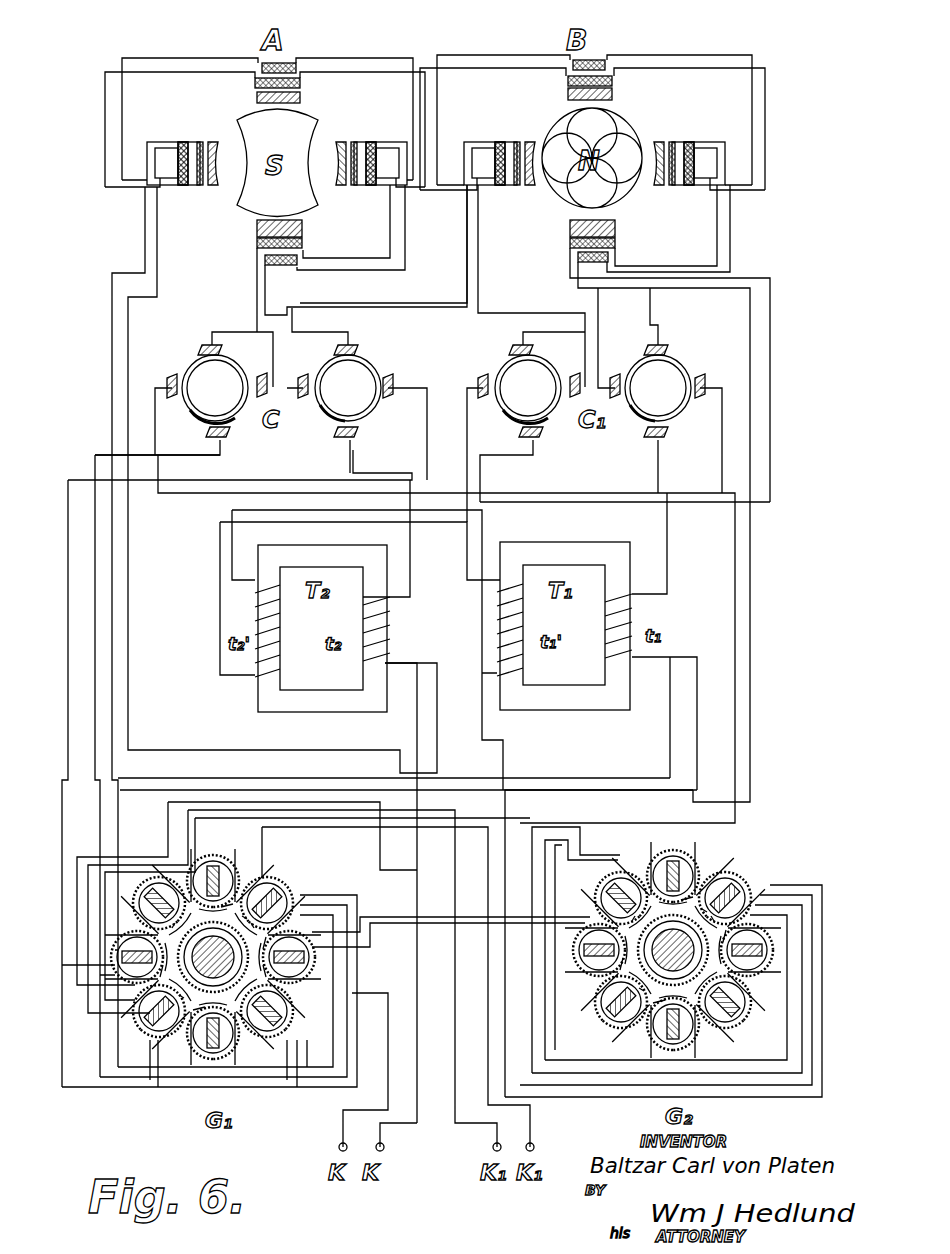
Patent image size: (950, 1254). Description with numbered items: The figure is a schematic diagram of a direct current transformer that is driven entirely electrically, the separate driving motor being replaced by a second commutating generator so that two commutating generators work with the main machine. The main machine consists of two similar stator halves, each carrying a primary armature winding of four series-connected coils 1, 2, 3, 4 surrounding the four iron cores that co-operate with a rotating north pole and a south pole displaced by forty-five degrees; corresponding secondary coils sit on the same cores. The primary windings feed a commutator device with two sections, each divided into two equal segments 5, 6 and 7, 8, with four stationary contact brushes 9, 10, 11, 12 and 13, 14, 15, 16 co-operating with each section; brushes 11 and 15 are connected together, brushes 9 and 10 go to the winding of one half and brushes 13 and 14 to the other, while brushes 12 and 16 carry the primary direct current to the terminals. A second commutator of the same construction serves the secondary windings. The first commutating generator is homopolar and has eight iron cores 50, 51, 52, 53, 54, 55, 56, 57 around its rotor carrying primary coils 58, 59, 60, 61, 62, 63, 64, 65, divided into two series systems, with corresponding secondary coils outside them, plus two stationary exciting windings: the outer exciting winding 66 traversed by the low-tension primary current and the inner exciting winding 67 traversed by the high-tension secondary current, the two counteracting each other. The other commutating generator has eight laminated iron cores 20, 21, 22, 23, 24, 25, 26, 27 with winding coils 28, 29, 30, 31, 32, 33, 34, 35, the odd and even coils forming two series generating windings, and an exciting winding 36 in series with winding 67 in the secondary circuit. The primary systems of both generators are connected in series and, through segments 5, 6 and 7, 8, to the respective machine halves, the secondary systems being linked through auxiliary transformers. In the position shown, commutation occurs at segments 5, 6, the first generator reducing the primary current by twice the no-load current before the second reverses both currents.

The primary armature winding coil 1 is at (300, 83).
The primary armature winding coil 2 is at (370, 142).
The primary armature winding coil 3 is at (302, 243).
The primary armature winding coil 4 is at (188, 185).
The commutator segment 5 is at (192, 425).
The commutator segment 6 is at (215, 388).
The commutator segment 7 is at (322, 410).
The commutator segment 8 is at (376, 368).
The contact brush 9 is at (170, 378).
The contact brush 10 is at (257, 370).
The contact brush 11 is at (202, 350).
The contact brush 12 is at (230, 437).
The contact brush 13 is at (303, 378).
The contact brush 14 is at (392, 400).
The contact brush 15 is at (358, 345).
The contact brush 16 is at (345, 440).
The iron core 20 is at (650, 915).
The iron core 21 is at (633, 956).
The iron core 22 is at (633, 1022).
The iron core 23 is at (665, 991).
The iron core 24 is at (712, 947).
The iron core 25 is at (750, 919).
The iron core 26 is at (692, 915).
The iron core 27 is at (658, 868).
The winding coil 28 is at (621, 884).
The winding coil 29 is at (590, 936).
The winding coil 30 is at (618, 1003).
The winding coil 31 is at (673, 1035).
The winding coil 32 is at (730, 1002).
The winding coil 33 is at (784, 950).
The winding coil 34 is at (728, 894).
The winding coil 35 is at (673, 857).
The exciting winding 36 is at (682, 950).
The iron core 50 is at (165, 883).
The iron core 51 is at (138, 985).
The iron core 52 is at (171, 980).
The iron core 53 is at (183, 1033).
The iron core 54 is at (252, 991).
The iron core 55 is at (323, 957).
The iron core 56 is at (283, 919).
The iron core 57 is at (242, 881).
The generating winding coil 58 is at (159, 887).
The generating winding coil 59 is at (102, 957).
The generating winding coil 60 is at (152, 1011).
The generating winding coil 61 is at (213, 1043).
The generating winding coil 62 is at (287, 1011).
The generating winding coil 63 is at (323, 951).
The generating winding coil 64 is at (271, 897).
The generating winding coil 65 is at (213, 865).
The outer exciting winding 66 is at (213, 946).
The exciting winding 67 is at (213, 970).